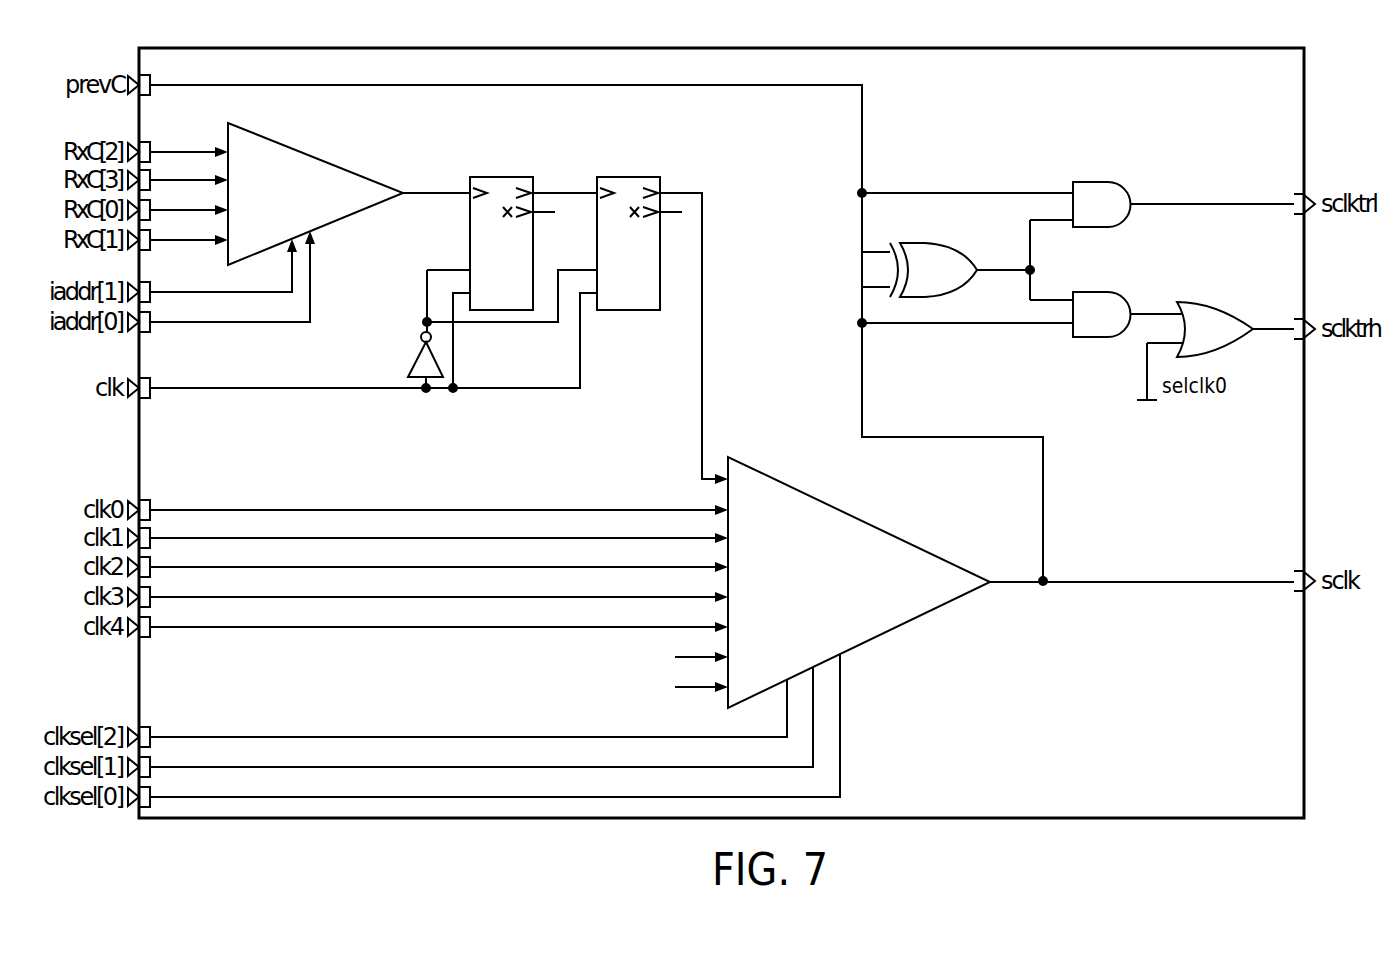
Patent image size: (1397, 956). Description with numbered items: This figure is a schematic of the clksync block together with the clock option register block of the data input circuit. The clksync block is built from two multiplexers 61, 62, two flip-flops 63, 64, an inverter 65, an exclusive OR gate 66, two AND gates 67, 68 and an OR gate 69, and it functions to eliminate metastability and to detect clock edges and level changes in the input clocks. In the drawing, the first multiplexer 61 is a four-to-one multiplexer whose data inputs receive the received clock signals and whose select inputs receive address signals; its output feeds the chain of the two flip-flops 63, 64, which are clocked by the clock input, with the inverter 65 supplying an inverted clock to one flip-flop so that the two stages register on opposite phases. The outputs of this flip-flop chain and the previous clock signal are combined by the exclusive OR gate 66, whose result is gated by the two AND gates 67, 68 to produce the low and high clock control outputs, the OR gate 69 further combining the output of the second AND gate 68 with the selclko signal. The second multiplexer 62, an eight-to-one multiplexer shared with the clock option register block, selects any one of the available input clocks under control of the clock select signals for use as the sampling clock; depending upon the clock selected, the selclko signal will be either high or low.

The multiplexer 61 is at (316, 155).
The multiplexer 62 is at (845, 510).
The flip-flop 63 is at (523, 281).
The flip-flop 64 is at (650, 281).
The inverter 65 is at (411, 359).
The exclusive OR gate 66 is at (940, 248).
The AND gate 67 is at (1095, 182).
The AND gate 68 is at (1095, 292).
The OR gate 69 is at (1212, 303).